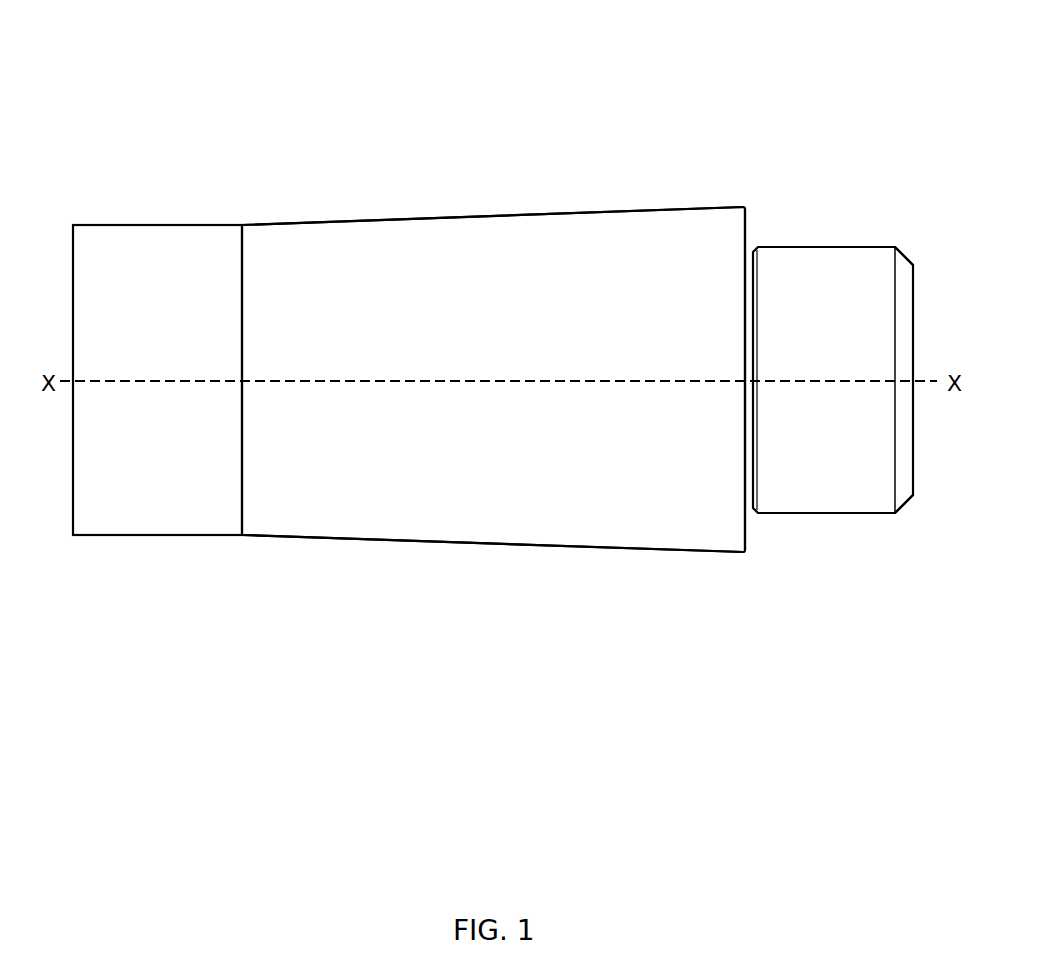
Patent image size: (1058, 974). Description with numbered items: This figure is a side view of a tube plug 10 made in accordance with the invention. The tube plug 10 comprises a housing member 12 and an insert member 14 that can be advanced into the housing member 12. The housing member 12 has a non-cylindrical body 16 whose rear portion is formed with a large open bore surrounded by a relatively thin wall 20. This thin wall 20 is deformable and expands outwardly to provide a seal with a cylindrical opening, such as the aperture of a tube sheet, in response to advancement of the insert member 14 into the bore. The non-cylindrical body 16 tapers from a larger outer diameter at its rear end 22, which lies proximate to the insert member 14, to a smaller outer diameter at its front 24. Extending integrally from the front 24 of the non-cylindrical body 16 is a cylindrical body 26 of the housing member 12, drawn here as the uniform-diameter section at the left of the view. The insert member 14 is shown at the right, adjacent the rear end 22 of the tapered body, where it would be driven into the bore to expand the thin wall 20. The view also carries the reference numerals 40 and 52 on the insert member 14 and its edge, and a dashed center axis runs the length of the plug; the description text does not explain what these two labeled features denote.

The tube plug 10 is at (552, 78).
The housing member 12 is at (428, 180).
The insert member 14 is at (838, 366).
The non-cylindrical body 16 is at (416, 542).
The thin wall 20 is at (504, 210).
The rear end 22 is at (686, 555).
The front 24 is at (236, 539).
The cylindrical body 26 is at (122, 537).
The head 40 is at (808, 515).
The chamfer 52 is at (930, 356).